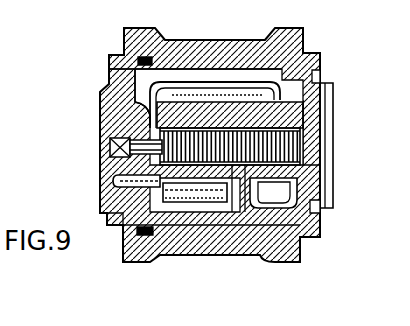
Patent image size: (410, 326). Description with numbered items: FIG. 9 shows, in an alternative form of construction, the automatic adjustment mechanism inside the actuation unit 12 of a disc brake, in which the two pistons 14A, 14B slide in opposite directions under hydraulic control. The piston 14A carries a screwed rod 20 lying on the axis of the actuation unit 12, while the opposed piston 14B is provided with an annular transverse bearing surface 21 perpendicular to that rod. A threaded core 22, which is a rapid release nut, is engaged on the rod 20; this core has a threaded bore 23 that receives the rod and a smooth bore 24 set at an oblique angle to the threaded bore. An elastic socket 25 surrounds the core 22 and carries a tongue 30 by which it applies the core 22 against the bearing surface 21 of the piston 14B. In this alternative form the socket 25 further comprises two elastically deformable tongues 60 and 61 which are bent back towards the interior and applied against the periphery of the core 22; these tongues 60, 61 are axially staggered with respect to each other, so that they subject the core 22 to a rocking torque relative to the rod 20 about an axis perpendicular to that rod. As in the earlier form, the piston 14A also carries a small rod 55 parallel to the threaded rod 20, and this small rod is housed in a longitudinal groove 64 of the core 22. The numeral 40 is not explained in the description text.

The actuation unit 12 is at (176, 258).
The piston 14A is at (112, 166).
The piston 14B is at (305, 195).
The screwed rod 20 is at (323, 103).
The annular transverse bearing surface 21 is at (220, 202).
The threaded core 22 is at (236, 102).
The threaded bore 23 is at (136, 118).
The smooth bore 24 is at (118, 180).
The elastic socket 25 is at (256, 205).
The tongue 30 is at (128, 96).
The spring 40 is at (328, 157).
The small rod 55 is at (150, 168).
The elastically deformable tongue 60 is at (178, 92).
The elastically deformable tongue 61 is at (242, 200).
The longitudinal groove 64 is at (124, 228).